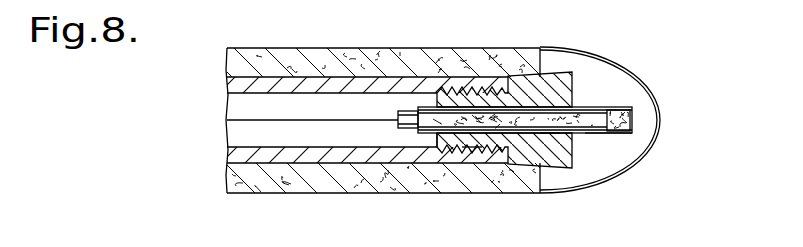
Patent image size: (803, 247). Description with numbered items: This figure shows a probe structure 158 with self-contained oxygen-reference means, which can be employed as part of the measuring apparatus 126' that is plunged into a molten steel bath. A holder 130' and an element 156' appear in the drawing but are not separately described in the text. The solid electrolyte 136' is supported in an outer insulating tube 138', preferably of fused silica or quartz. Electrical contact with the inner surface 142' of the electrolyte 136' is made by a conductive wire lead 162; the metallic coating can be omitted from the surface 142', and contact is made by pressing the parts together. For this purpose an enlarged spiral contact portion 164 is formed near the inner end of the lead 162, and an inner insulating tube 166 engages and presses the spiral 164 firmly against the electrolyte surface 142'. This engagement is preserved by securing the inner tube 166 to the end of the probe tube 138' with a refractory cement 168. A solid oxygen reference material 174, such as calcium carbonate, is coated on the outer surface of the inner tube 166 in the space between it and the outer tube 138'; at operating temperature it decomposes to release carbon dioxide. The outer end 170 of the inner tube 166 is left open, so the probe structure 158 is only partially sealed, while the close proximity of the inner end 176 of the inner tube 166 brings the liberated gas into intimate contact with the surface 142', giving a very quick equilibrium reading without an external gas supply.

The measuring apparatus 126' is at (383, 106).
The threaded tip body 130' is at (539, 96).
The outer end of the inner tube 170 is at (398, 112).
The refractory cement 168 is at (399, 134).
The probe structure 158 is at (600, 100).
The enlarged contact portion 164 is at (603, 108).
The inner surface of the electrolyte 142' is at (567, 102).
The solid electrolyte 136' is at (667, 116).
The insulating tube 138' is at (656, 149).
The dome cap 156' is at (615, 120).
The inner end of the inner tube 176 is at (592, 133).
The conductive wire lead 162 is at (433, 136).
The inner insulating tube 166 is at (476, 134).
The solid oxygen reference material 174 is at (548, 135).